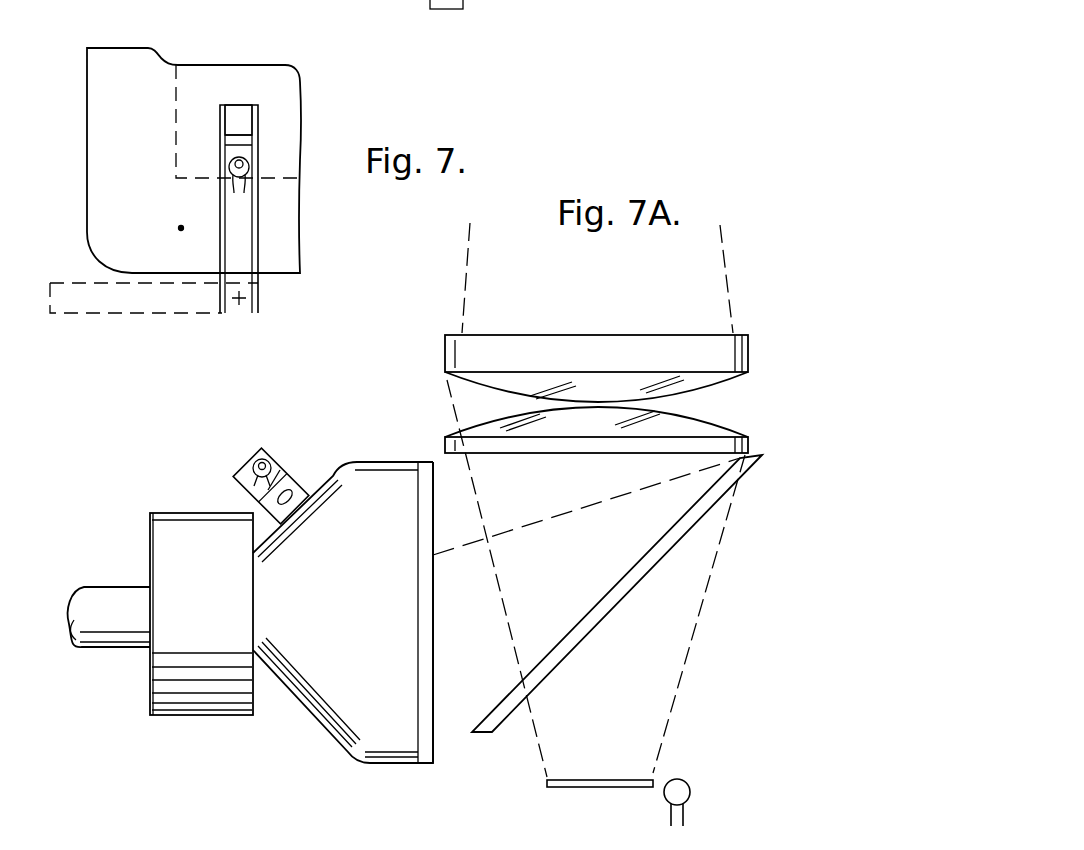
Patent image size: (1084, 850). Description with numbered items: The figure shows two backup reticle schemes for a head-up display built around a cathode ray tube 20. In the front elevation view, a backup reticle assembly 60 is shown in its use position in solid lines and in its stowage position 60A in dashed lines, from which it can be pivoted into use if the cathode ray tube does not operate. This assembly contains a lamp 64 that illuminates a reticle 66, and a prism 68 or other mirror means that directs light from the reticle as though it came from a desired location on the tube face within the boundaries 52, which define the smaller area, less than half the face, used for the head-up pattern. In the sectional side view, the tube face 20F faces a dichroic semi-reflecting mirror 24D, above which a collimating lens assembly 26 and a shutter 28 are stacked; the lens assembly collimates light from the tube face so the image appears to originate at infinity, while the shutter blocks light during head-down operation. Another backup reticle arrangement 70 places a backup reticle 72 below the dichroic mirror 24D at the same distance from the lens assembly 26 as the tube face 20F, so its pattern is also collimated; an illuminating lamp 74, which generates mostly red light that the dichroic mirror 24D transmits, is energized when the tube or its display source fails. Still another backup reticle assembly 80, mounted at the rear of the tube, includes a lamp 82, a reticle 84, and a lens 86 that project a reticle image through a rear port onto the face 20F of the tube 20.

In FIG. 7, the boundaries 52 is at (157, 48).
In FIG. 7, the backup reticle assembly 60 is at (270, 283).
In FIG. 7, the stowage position 60A is at (154, 316).
In FIG. 7, the lamp 64 is at (229, 171).
In FIG. 7, the reticle 66 is at (232, 142).
In FIG. 7, the prism 68 is at (240, 108).
In FIG. 7A, the cathode ray tube 20 is at (347, 452).
In FIG. 7A, the tube face 20F is at (435, 596).
In FIG. 7A, the backup reticle assembly 80 is at (259, 440).
In FIG. 7A, the lamp 82 is at (248, 466).
In FIG. 7A, the reticle 84 is at (274, 480).
In FIG. 7A, the lens 86 is at (265, 503).
In FIG. 7A, the shutter 28 is at (445, 370).
In FIG. 7A, the collimating lens assembly 26 is at (705, 423).
In FIG. 7A, the dichroic semi-reflecting mirror 24D is at (683, 540).
In FIG. 7A, the backup reticle 72 is at (565, 789).
In FIG. 7A, the backup reticle arrangement 70 is at (692, 781).
In FIG. 7A, the illuminating lamp 74 is at (692, 797).